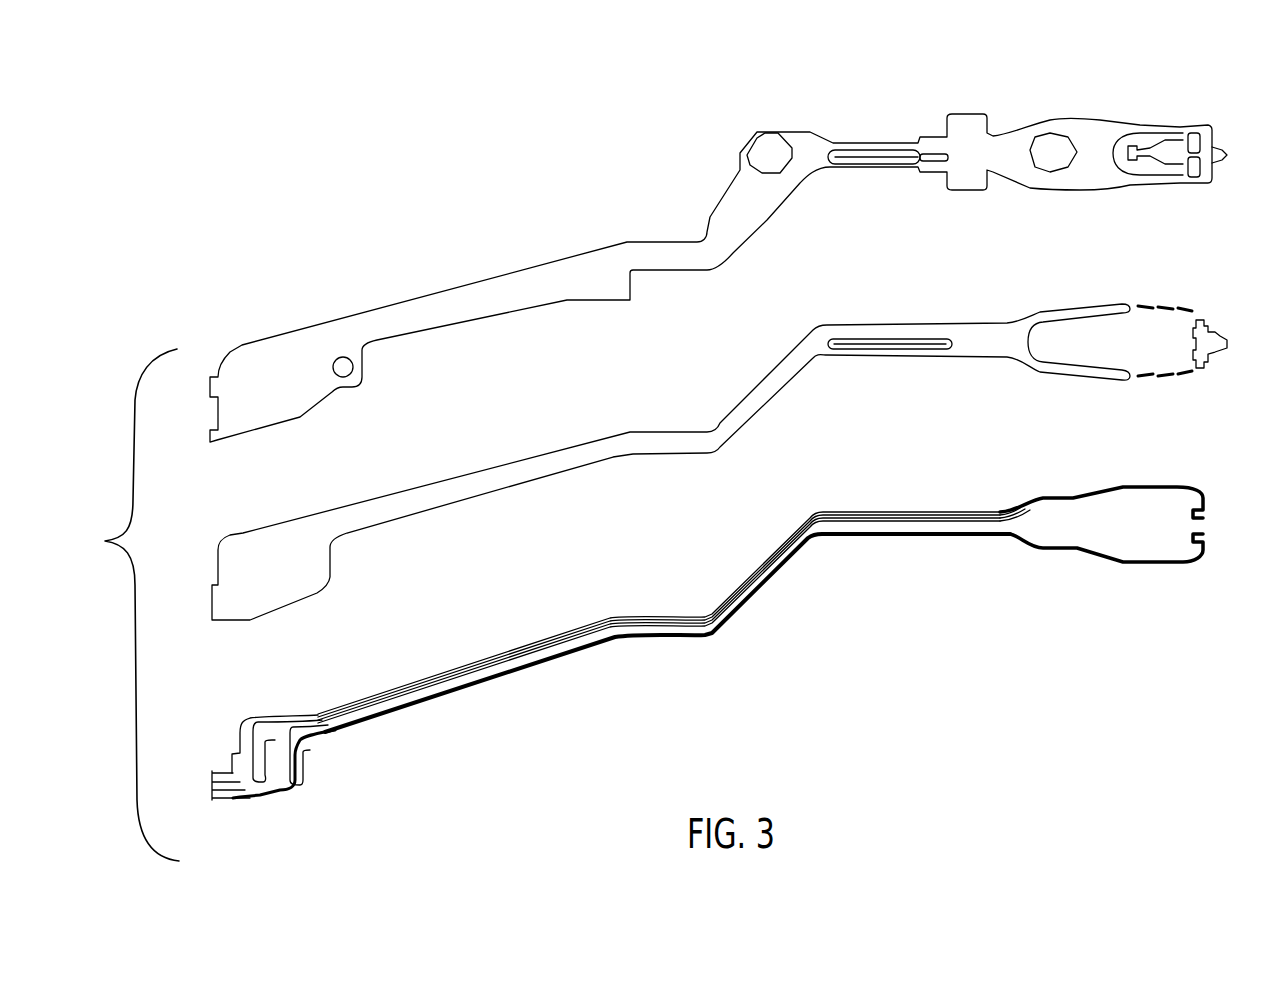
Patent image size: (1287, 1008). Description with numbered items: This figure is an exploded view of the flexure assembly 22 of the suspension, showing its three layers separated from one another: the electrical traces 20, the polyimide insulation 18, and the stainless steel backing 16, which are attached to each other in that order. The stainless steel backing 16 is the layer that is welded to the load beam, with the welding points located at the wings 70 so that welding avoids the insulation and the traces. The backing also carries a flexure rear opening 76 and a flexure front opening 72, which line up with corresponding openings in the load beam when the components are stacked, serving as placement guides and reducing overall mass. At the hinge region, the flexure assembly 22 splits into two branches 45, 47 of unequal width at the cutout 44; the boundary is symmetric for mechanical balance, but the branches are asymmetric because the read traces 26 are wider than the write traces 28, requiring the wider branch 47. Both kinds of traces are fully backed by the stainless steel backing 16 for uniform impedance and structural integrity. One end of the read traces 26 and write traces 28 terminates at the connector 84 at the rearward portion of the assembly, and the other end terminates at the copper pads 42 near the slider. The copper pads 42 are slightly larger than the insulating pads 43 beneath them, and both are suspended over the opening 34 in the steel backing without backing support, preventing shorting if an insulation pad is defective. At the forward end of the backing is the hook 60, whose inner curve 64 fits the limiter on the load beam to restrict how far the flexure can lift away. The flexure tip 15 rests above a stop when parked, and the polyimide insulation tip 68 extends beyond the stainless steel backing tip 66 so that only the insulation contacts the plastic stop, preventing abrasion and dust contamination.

The flexure tip 15 is at (1226, 163).
The stainless steel backing 16 is at (405, 287).
The polyimide insulation 18 is at (440, 472).
The electrical traces 20 is at (707, 664).
The flexure assembly 22 is at (124, 605).
The read traces 26 is at (858, 507).
The write traces 28 is at (863, 541).
The opening 34 is at (1191, 132).
The copper pads 42 is at (1190, 520).
The insulating pads 43 is at (1187, 332).
The cutout 44 is at (867, 158).
The branch 45 is at (843, 164).
The branch 47 is at (848, 143).
The hook 60 is at (1118, 168).
The inner curve 64 is at (1137, 150).
The stainless steel backing tip 66 is at (1219, 148).
The polyimide insulation tip 68 is at (1212, 337).
The wings 70 is at (955, 117).
The flexure front opening 72 is at (1049, 143).
The flexure rear opening 76 is at (765, 150).
The connector 84 is at (296, 760).